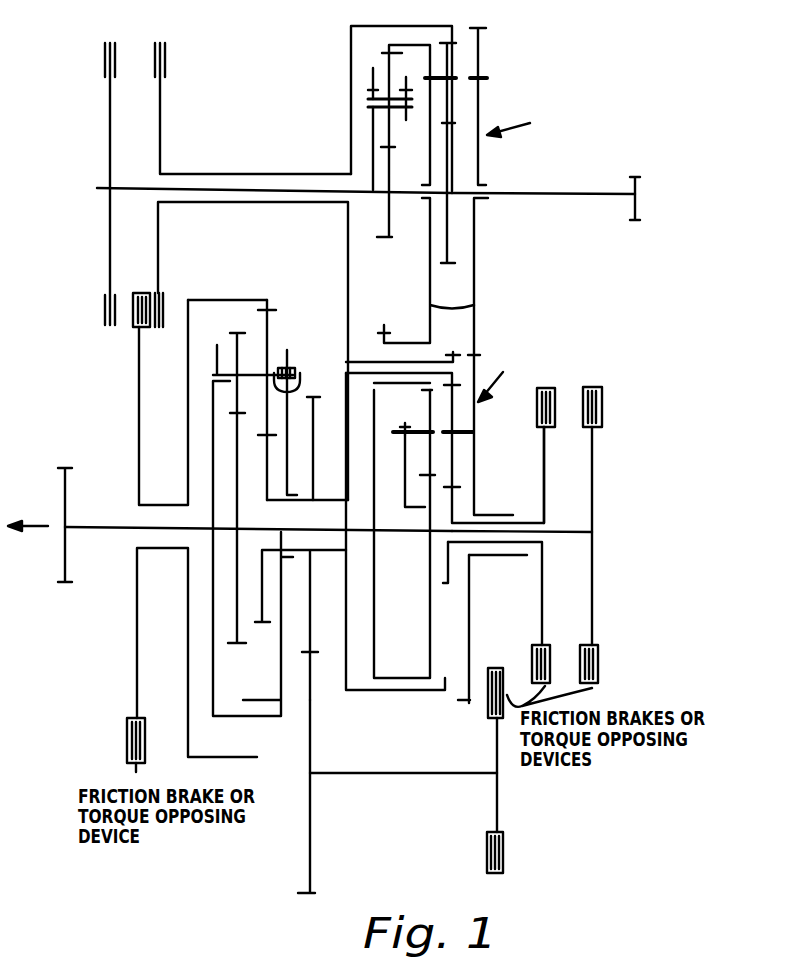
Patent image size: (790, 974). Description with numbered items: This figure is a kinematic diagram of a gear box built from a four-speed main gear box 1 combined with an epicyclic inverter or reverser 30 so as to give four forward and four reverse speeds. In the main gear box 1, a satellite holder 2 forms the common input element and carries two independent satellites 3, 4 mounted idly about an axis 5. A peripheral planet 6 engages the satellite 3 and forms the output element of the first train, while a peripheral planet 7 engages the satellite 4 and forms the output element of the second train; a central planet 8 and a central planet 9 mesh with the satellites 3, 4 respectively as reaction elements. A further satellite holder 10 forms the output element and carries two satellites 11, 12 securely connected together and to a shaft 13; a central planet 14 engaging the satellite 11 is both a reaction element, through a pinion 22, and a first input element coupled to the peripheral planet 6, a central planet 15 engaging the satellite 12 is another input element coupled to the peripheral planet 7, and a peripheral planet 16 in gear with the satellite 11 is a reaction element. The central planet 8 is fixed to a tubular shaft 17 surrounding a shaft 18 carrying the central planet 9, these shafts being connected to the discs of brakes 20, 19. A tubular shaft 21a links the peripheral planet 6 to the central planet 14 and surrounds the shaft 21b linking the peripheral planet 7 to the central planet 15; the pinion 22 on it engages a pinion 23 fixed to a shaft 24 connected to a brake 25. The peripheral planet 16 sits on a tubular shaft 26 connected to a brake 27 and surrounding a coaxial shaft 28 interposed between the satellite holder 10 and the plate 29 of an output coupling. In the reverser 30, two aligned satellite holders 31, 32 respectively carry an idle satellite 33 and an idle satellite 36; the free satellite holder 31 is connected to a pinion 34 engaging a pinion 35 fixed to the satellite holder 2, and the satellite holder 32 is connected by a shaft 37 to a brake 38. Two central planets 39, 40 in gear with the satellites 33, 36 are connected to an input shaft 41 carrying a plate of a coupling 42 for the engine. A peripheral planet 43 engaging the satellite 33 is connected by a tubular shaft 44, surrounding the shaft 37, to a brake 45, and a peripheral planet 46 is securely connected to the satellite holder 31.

The main gear box 1 is at (502, 369).
The satellite holder 2 is at (425, 507).
The satellite 3 is at (452, 458).
The satellite 4 is at (422, 405).
The axis 5 is at (460, 435).
The peripheral planet 6 is at (440, 683).
The peripheral planet 7 is at (428, 675).
The central planet 8 is at (472, 597).
The central planet 9 is at (470, 598).
The satellite holder 10 is at (213, 703).
The satellite 11 is at (272, 317).
The satellite 12 is at (240, 350).
The shaft 13 is at (293, 383).
The central planet 14 is at (267, 487).
The central planet 15 is at (237, 457).
The peripheral planet 16 is at (259, 755).
The tubular shaft 17 is at (527, 556).
The shaft 18 is at (548, 532).
The brake 19 is at (593, 587).
The brake 20 is at (543, 473).
The tubular shaft 21a is at (300, 512).
The shaft 21b is at (322, 516).
The pinion 22 is at (313, 618).
The pinion 23 is at (312, 743).
The shaft 24 is at (380, 775).
The brake 25 is at (497, 815).
The tubular shaft 26 is at (155, 504).
The brake 27 is at (137, 410).
The shaft 28 is at (98, 530).
The plate 29 is at (65, 495).
The inverter or reverser 30 is at (532, 124).
The satellite holder 31 is at (474, 292).
The satellite holder 32 is at (373, 115).
The satellite 33 is at (451, 107).
The pinion 34 is at (479, 33).
The pinion 35 is at (463, 703).
The satellite 36 is at (388, 62).
The shaft 37 is at (207, 175).
The brake 38 is at (106, 127).
The central planet 39 is at (447, 163).
The central planet 40 is at (387, 165).
The input shaft 41 is at (538, 200).
The coupling 42 is at (632, 182).
The peripheral planet 43 is at (451, 355).
The tubular shaft 44 is at (210, 203).
The brake 45 is at (160, 137).
The peripheral planet 46 is at (385, 327).